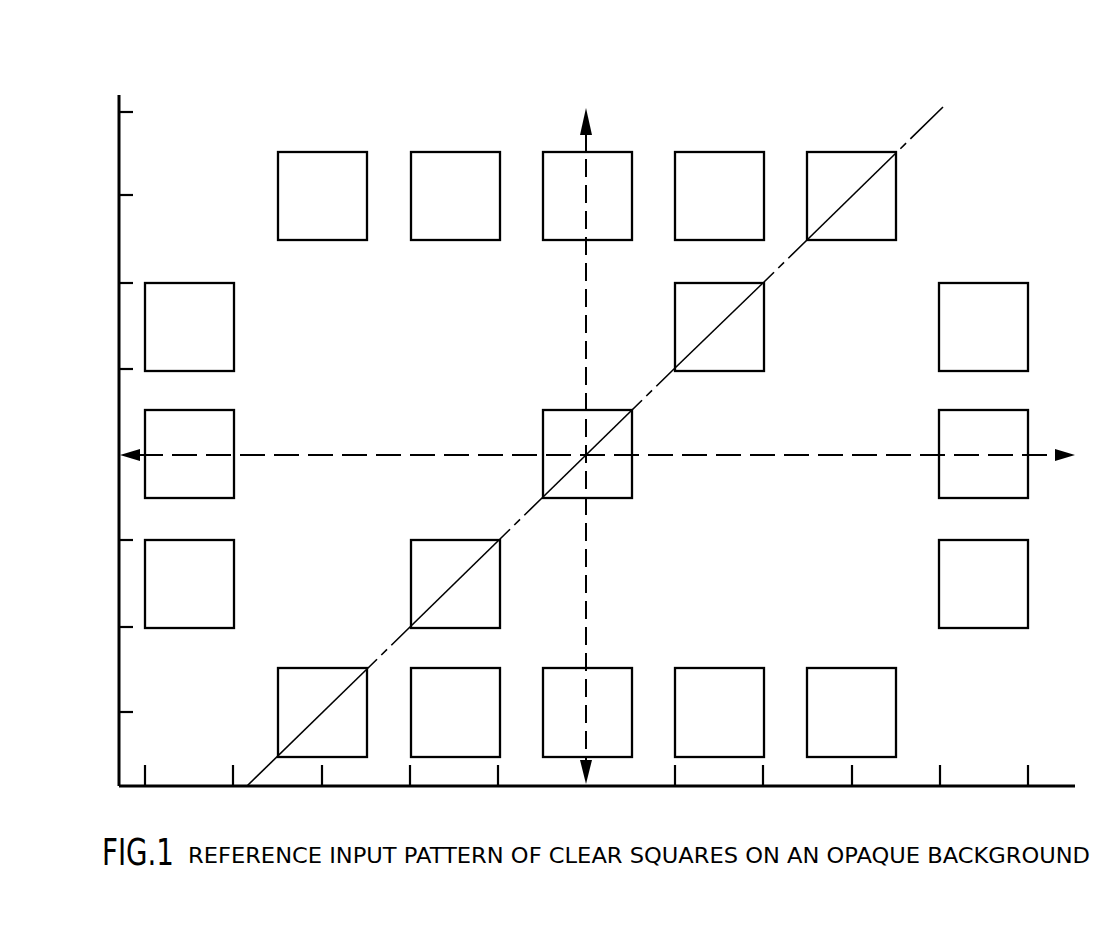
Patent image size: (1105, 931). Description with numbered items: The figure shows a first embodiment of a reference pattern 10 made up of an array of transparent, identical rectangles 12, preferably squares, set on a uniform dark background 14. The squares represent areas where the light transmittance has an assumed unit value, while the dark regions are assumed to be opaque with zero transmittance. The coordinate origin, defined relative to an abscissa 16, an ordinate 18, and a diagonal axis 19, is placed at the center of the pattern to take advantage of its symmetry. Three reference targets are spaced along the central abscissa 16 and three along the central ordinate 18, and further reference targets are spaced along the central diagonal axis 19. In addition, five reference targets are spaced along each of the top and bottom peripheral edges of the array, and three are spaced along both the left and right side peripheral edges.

The reference pattern 10 is at (362, 72).
The transparent rectangles 12 is at (334, 228).
The dark background 14 is at (367, 331).
The abscissa 16 is at (357, 452).
The ordinate 18 is at (585, 340).
The diagonal axis 19 is at (636, 406).